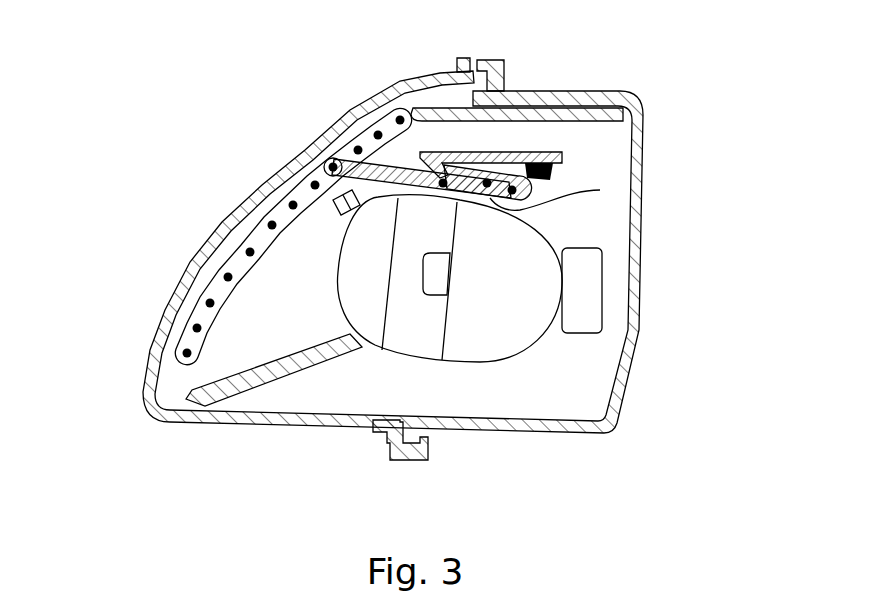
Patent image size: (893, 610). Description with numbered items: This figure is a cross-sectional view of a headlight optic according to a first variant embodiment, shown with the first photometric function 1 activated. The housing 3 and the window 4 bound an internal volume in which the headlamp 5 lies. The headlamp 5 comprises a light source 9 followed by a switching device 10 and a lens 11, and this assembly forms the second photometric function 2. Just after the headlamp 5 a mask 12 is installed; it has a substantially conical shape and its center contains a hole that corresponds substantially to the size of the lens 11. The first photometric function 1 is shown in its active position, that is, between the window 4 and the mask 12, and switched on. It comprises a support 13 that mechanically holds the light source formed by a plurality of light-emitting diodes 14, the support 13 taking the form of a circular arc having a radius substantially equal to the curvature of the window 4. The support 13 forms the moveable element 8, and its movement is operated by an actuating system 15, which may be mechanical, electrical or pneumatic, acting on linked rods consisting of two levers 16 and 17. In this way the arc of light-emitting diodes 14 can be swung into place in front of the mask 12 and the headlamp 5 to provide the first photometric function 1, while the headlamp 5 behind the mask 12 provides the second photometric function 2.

The first photometric function 1 is at (287, 188).
The second photometric function 2 is at (535, 347).
The housing 3 is at (645, 255).
The window 4 is at (147, 403).
The headlamp 5 is at (600, 190).
The moveable element 8 is at (185, 366).
The light source 9 is at (500, 325).
The switching device 10 is at (417, 333).
The lens 11 is at (372, 317).
The mask 12 is at (273, 370).
The support 13 is at (304, 195).
The light-emitting diodes 14 is at (232, 283).
The actuating system 15 is at (553, 205).
The lever 16 is at (403, 168).
The lever 17 is at (543, 227).